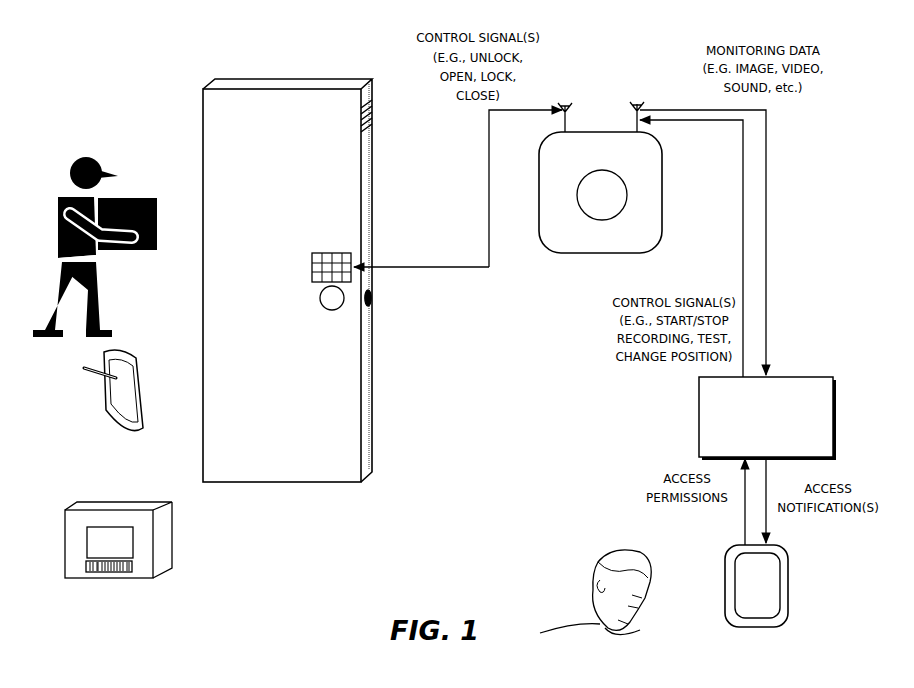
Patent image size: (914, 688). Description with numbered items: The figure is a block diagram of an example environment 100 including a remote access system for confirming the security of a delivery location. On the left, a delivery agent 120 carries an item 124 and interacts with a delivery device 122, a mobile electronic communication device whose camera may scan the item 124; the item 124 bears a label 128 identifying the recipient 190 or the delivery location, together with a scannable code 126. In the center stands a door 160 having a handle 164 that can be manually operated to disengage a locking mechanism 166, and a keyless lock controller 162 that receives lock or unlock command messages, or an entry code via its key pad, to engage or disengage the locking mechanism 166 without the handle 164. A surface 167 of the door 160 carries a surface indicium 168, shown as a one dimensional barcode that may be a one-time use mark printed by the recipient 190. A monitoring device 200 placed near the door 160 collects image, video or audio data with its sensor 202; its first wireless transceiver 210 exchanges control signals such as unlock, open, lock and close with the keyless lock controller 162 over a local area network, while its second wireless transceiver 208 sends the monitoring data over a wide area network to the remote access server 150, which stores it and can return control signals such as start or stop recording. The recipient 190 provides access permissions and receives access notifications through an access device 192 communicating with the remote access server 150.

The environment 100 is at (80, 89).
The delivery agent 120 is at (98, 146).
The delivery device 122 is at (130, 354).
The item 124 is at (124, 508).
The scannable code 126 is at (107, 575).
The label 128 is at (86, 540).
The remote access server 150 is at (767, 418).
The door 160 is at (336, 68).
The keyless lock controller 162 is at (312, 254).
The handle 164 is at (319, 296).
The locking mechanism 166 is at (370, 308).
The surface 167 is at (371, 162).
The surface indicium 168 is at (375, 113).
The recipient 190 is at (631, 538).
The access device 192 is at (770, 546).
The monitoring device 200 is at (662, 165).
The sensor 202 is at (600, 171).
The second wireless transceiver 208 is at (634, 125).
The first wireless transceiver 210 is at (571, 102).